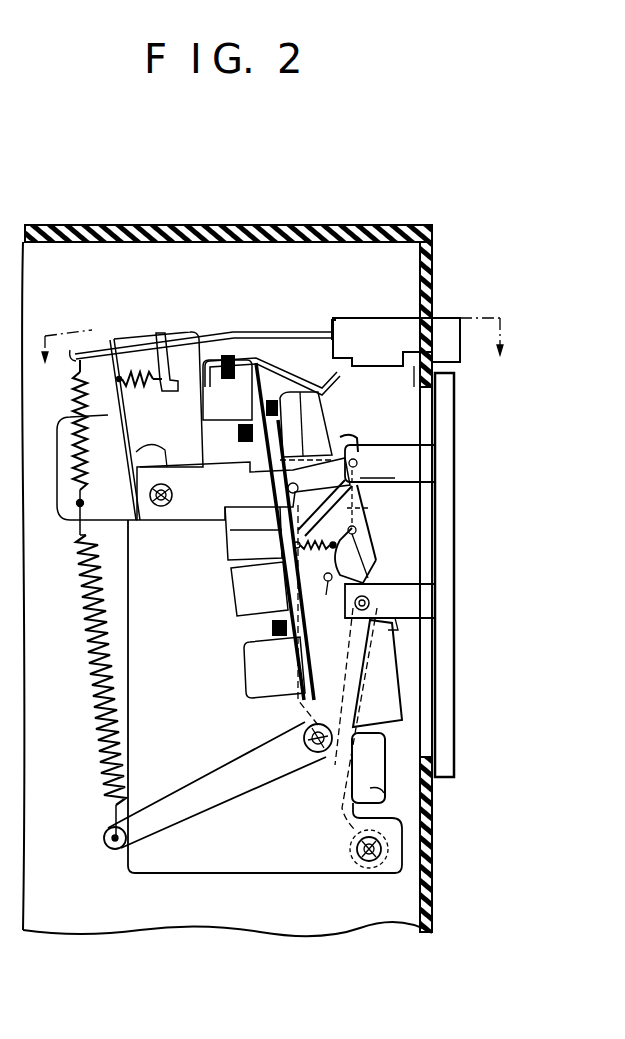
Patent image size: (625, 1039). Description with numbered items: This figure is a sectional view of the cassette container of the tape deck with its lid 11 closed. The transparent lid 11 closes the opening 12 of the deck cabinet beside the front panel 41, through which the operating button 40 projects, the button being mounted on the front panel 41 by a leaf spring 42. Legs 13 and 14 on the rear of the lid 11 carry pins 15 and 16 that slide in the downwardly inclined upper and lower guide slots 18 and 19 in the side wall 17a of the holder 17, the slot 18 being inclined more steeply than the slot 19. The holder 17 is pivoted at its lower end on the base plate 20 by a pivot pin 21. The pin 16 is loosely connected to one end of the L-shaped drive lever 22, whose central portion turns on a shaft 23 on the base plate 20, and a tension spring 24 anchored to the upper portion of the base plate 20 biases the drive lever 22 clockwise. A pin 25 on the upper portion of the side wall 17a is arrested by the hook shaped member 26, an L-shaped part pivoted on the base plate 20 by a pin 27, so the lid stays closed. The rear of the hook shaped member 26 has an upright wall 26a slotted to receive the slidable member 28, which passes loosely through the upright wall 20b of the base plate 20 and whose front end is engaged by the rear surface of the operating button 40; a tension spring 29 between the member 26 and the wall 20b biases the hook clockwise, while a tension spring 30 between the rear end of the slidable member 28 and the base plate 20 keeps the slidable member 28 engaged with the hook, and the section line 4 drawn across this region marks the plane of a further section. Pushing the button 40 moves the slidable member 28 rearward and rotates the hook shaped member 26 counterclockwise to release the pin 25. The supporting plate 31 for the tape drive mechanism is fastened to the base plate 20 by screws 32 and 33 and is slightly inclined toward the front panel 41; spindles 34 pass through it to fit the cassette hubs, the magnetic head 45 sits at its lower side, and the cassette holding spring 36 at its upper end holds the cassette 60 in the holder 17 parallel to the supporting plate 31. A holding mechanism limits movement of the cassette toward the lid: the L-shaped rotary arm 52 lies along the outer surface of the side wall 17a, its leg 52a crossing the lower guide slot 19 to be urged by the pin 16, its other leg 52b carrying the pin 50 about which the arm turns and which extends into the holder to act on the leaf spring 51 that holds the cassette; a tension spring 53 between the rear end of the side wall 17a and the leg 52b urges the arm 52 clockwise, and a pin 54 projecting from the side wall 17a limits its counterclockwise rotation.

The section line 4- 4 is at (269, 358).
The lid 11 is at (456, 770).
The opening 12 is at (417, 402).
The legs 13 is at (440, 462).
The legs 14 is at (440, 600).
The pin 15 is at (358, 462).
The pin 16 is at (400, 631).
The holder 17 is at (392, 670).
The side wall 17a is at (384, 768).
The upper guide slot 18 is at (390, 471).
The lower guide slot 19 is at (343, 640).
The base plate 20 is at (205, 875).
The upright wall 20b is at (168, 337).
The pivot pin 21 is at (356, 850).
The drive lever 22 is at (280, 775).
The shaft 23 is at (303, 726).
The tension spring 24 is at (88, 704).
The pin 25 is at (273, 531).
The hook shaped member 26 is at (185, 505).
The upright wall 26a is at (170, 431).
The pin 27 is at (173, 493).
The slidable member 28 is at (224, 333).
The tension spring 29 is at (140, 390).
The tension spring 30 is at (70, 471).
The supporting plate 31 is at (292, 560).
The screw 32 is at (236, 426).
The screw 33 is at (274, 659).
The spindles 34 is at (262, 570).
The cassette holding spring 36 is at (310, 374).
The operating button 40 is at (388, 312).
The front panel 41 is at (432, 262).
The leaf spring 42 is at (330, 322).
The recording/reproducing head 45 is at (398, 806).
The pin 50 is at (357, 531).
The leaf spring 51 is at (366, 507).
The rotary arm 52 is at (372, 576).
The leg 52a is at (370, 598).
The leg 52b is at (370, 555).
The tension spring 53 is at (318, 552).
The pin 54 is at (326, 593).
The cassette 60 is at (334, 410).